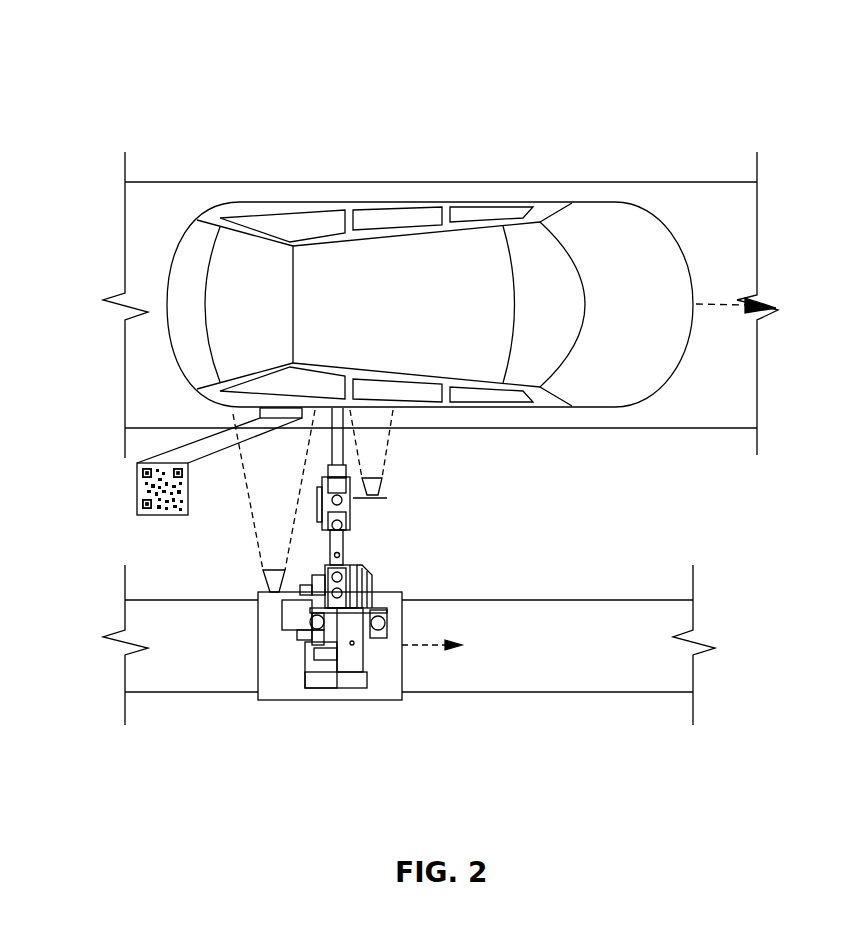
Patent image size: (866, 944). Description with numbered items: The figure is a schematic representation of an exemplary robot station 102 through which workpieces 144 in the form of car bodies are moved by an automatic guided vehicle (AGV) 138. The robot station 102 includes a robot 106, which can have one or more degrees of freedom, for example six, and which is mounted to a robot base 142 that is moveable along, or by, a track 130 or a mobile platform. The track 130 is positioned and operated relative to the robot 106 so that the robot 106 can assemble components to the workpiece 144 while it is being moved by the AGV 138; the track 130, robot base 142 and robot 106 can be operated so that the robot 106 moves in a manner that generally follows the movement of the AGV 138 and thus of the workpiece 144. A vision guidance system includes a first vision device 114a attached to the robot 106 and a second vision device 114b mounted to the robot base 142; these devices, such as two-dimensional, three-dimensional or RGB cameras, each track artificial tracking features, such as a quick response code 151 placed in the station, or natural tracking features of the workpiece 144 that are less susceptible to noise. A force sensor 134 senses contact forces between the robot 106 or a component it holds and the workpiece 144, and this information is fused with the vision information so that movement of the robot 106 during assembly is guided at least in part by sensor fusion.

The robot station 102 is at (722, 537).
The robot 106 is at (347, 530).
The first vision device 114a is at (383, 490).
The second vision device 114b is at (262, 572).
The track 130 is at (580, 673).
The force sensor 134 is at (342, 442).
The automatic guided vehicle (AGV) 138 is at (730, 385).
The robot base 142 is at (276, 682).
The workpiece 144 is at (625, 245).
The fiducial marker / QR code 151 is at (138, 488).